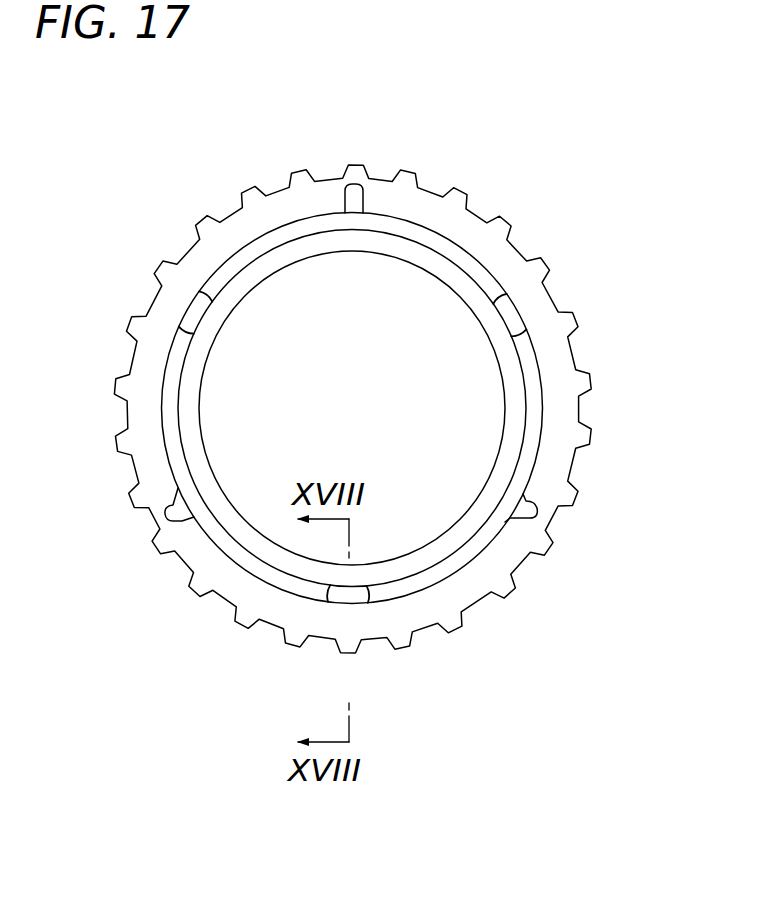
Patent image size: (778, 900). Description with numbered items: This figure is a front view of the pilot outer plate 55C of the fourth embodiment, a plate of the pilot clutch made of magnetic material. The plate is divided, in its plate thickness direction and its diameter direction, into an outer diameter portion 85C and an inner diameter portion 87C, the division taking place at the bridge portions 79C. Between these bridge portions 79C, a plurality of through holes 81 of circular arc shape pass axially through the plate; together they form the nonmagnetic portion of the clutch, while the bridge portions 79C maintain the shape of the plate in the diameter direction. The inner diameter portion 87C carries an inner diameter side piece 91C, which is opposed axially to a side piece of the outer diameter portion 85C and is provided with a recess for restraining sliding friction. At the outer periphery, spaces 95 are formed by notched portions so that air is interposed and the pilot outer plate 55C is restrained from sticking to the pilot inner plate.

The pilot outer plate 55C is at (441, 174).
The outer diameter portion 85C is at (232, 234).
The through hole 81 is at (463, 251).
The inner diameter portion 87C is at (287, 272).
The space 95 is at (352, 205).
The bridge portion 79C is at (187, 296).
The inner diameter side piece 91C is at (182, 323).